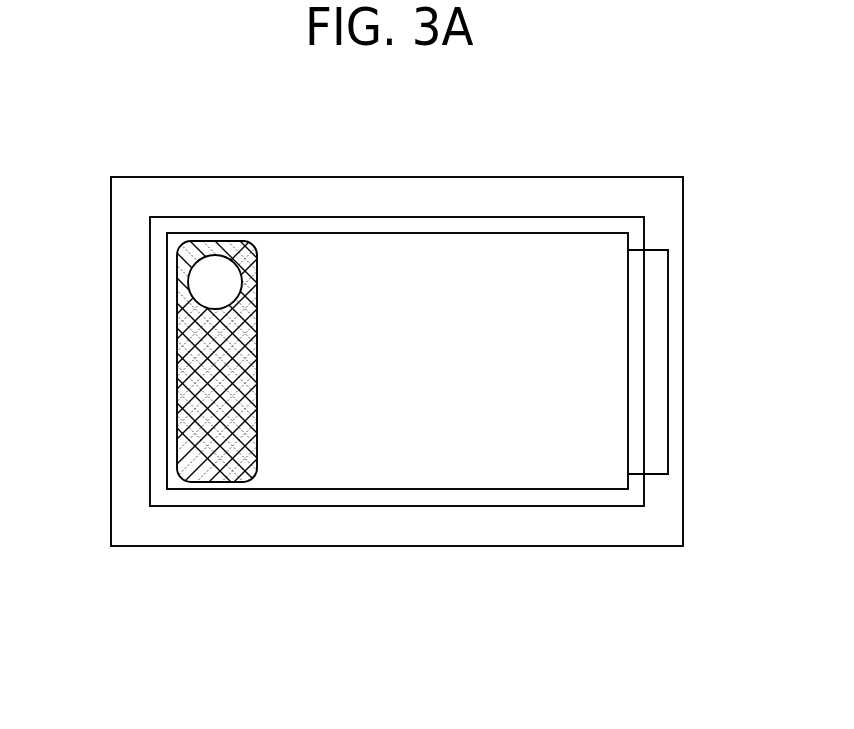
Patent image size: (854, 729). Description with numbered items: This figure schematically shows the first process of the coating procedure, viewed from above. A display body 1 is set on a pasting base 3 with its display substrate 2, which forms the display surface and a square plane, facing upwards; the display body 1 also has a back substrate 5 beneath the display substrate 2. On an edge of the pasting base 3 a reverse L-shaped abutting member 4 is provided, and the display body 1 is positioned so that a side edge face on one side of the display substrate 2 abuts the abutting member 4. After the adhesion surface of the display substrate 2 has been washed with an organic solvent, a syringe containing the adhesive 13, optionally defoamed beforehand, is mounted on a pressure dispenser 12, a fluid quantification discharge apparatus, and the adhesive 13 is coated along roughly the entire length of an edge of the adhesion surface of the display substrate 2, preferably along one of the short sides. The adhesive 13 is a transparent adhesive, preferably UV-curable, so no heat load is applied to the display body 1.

The display body 1 is at (366, 372).
The display substrate 2 is at (305, 478).
The pasting base 3 is at (508, 528).
The abutting member 4 is at (655, 344).
The back substrate 5 is at (385, 510).
The pressure dispenser 12 is at (217, 267).
The adhesive 13 is at (177, 351).